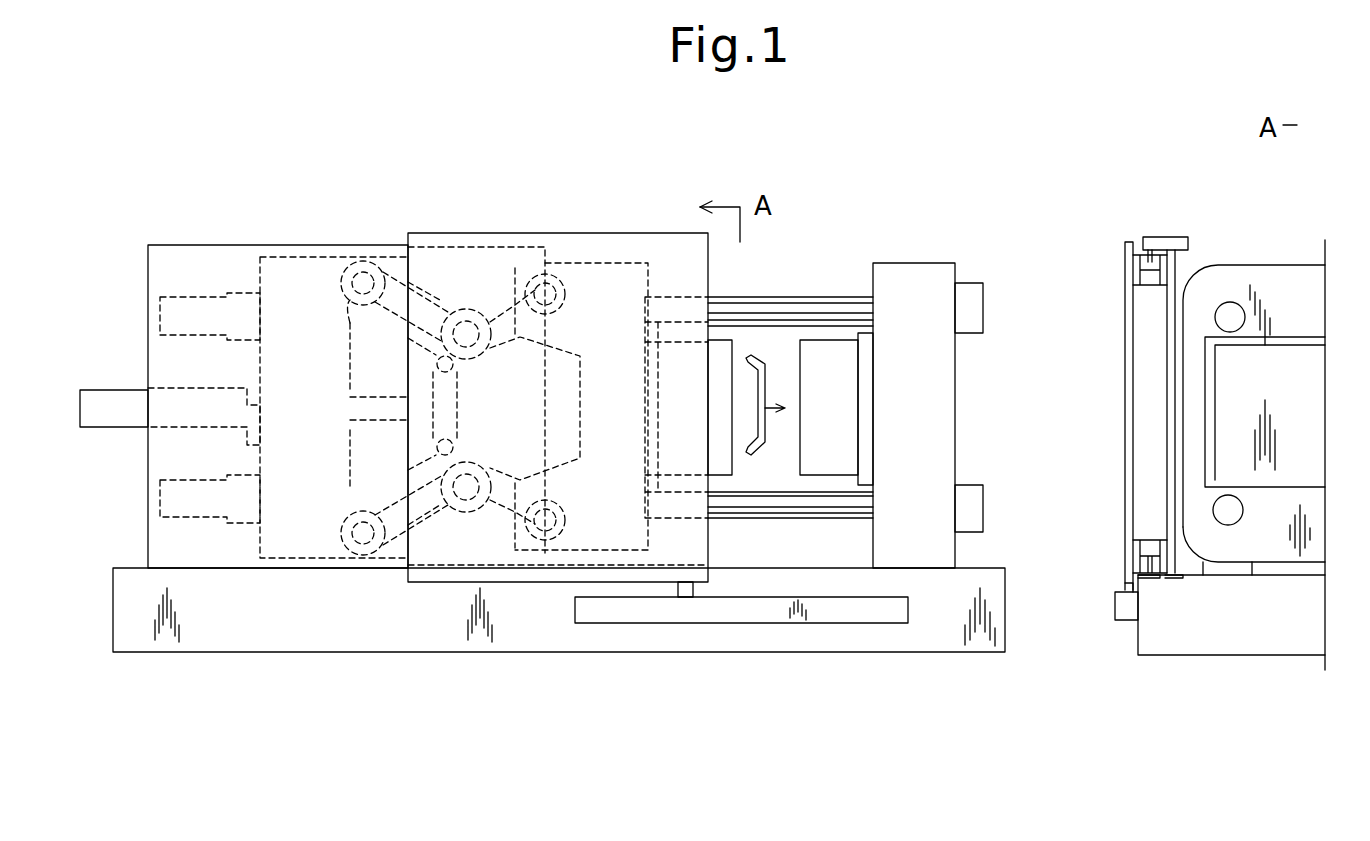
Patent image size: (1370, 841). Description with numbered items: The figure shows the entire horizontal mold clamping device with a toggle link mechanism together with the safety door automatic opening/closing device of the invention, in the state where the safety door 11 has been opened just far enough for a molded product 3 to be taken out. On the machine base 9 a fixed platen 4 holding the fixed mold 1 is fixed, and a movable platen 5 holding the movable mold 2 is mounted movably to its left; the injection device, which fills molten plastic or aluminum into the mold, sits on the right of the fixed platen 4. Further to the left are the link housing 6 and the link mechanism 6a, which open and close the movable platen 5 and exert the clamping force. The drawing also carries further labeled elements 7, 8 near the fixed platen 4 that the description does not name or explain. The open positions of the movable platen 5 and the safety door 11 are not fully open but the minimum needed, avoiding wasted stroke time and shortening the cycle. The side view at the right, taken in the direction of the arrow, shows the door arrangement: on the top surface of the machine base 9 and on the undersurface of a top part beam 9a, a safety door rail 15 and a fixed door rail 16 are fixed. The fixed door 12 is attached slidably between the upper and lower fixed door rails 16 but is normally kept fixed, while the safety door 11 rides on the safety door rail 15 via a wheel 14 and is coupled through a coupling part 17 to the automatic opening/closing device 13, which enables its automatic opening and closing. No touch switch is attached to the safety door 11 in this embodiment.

The fixed mold 1 is at (832, 355).
The movable mold 2 is at (722, 350).
The molded product 3 is at (765, 440).
The fixed platen 4 is at (915, 280).
The movable platen 5 is at (632, 270).
The link housing 6 is at (290, 253).
The link mechanism 6a is at (434, 300).
The tie bar 7 is at (858, 303).
The tie bar nut 8 is at (970, 297).
The machine base 9 is at (957, 633).
The top part beam 9a is at (1162, 237).
The safety door 11 is at (592, 247).
The fixed door 12 is at (207, 257).
The automatic opening/closing device 13 is at (848, 623).
The wheel 14 is at (1153, 550).
The safety door rail 15 is at (1150, 577).
The fixed door rail 16 is at (1170, 577).
The coupling part 17 is at (680, 598).